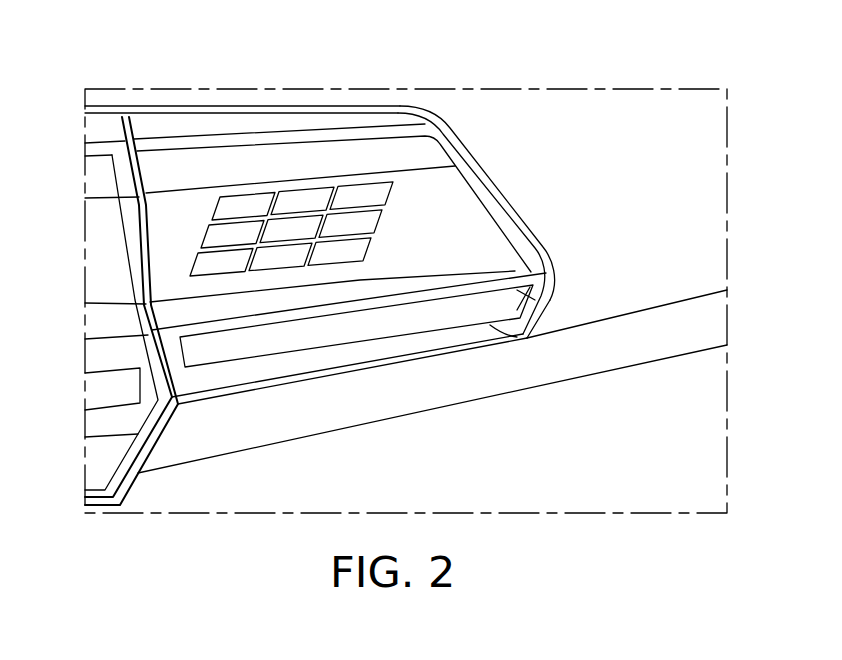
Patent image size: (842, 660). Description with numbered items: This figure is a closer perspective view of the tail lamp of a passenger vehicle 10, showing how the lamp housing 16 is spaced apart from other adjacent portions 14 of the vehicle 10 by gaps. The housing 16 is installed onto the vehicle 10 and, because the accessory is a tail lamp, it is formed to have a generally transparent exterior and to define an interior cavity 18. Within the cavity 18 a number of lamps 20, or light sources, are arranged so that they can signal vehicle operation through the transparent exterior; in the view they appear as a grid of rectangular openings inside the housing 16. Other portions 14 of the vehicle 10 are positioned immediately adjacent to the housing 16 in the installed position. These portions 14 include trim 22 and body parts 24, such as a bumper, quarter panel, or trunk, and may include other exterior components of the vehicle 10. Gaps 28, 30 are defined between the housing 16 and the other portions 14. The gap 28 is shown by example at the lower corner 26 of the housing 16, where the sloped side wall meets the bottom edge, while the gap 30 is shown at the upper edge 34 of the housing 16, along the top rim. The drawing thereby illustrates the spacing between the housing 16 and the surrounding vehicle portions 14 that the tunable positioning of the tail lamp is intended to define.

The vehicle 10 is at (706, 236).
The other portions of the vehicle 14 is at (324, 263).
The housing 16 is at (187, 126).
The interior cavity 18 is at (505, 255).
The lamps 20 is at (210, 237).
The trim 22 is at (425, 410).
The body parts 24 is at (613, 192).
The lower corner 26 is at (524, 313).
The gap 28 is at (560, 315).
The gap 30 is at (357, 92).
The upper edge 34 is at (303, 119).